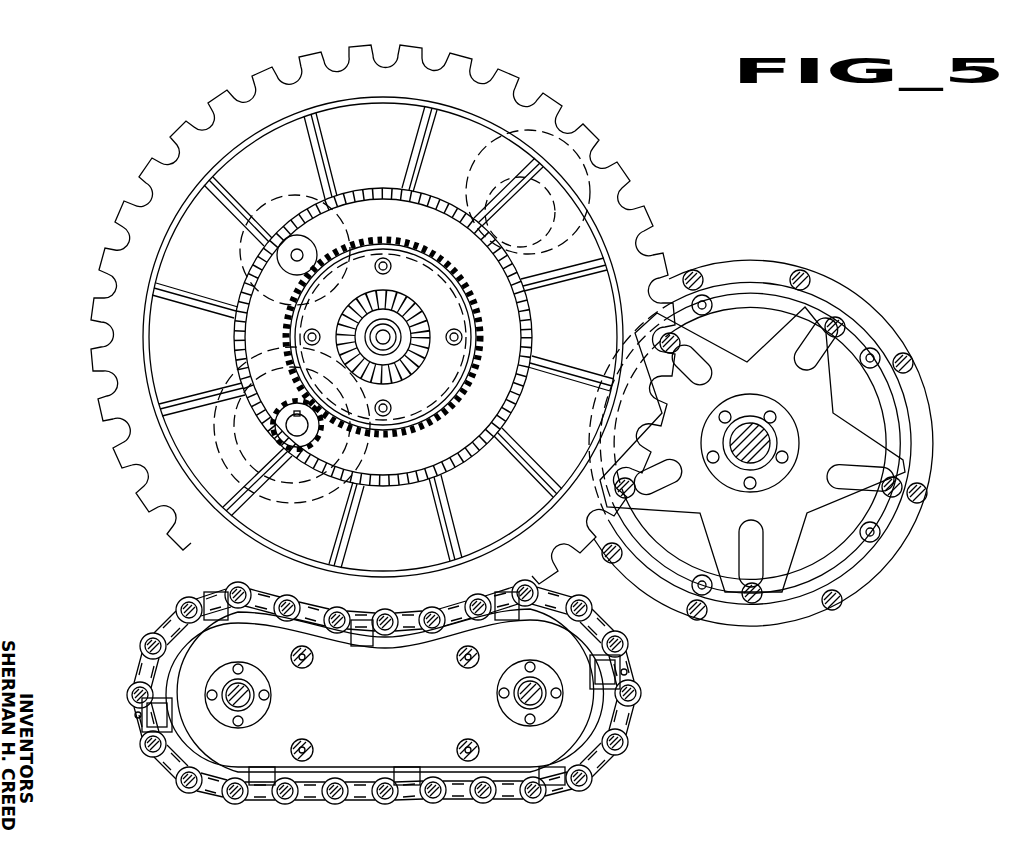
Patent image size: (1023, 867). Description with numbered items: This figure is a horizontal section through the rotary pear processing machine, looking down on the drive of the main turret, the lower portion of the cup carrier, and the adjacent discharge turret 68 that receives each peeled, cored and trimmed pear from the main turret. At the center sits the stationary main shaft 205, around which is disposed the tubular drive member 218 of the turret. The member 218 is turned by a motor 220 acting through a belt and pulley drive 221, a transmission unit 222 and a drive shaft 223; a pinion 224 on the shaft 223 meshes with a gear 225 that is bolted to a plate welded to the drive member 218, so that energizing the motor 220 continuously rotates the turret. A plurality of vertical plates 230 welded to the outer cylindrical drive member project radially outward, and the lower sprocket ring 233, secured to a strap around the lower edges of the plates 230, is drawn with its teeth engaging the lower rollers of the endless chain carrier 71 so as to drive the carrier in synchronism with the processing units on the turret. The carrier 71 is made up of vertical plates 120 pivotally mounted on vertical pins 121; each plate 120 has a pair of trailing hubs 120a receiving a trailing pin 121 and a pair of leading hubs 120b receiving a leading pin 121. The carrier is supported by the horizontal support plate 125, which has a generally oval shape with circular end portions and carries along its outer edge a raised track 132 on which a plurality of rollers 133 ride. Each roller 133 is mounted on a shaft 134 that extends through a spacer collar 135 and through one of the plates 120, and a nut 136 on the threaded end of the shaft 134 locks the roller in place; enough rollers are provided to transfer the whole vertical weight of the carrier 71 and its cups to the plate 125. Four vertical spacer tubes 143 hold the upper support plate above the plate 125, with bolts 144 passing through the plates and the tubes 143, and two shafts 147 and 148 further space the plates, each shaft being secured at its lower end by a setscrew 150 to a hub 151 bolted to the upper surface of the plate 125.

The discharge turret 68 is at (858, 280).
The endless chain carrier 71 is at (395, 699).
The vertical plates 120 is at (298, 612).
The trailing hubs 120a is at (632, 732).
The leading hubs 120b is at (620, 770).
The vertical pins 121 is at (180, 635).
The horizontal support plate 125 is at (410, 711).
The raised track 132 is at (573, 632).
The rollers 133 is at (362, 646).
The shaft 134 is at (141, 714).
The spacer collar 135 is at (143, 702).
The nut 136 is at (138, 720).
The vertical spacer tubes 143 is at (312, 660).
The bolts 144 is at (302, 740).
The shaft 147 is at (243, 690).
The shaft 148 is at (533, 700).
The setscrew 150 is at (236, 694).
The hub 151 is at (242, 722).
The stationary main shaft 205 is at (392, 320).
The tubular drive member 218 is at (378, 298).
The motor 220 is at (285, 195).
The belt and pulley drive 221 is at (332, 228).
The transmission unit 222 is at (225, 380).
The drive shaft 223 is at (285, 423).
The pinion 224 is at (330, 440).
The gear 225 is at (470, 402).
The vertical plates 230 is at (198, 300).
The lower sprocket ring 233 is at (100, 318).